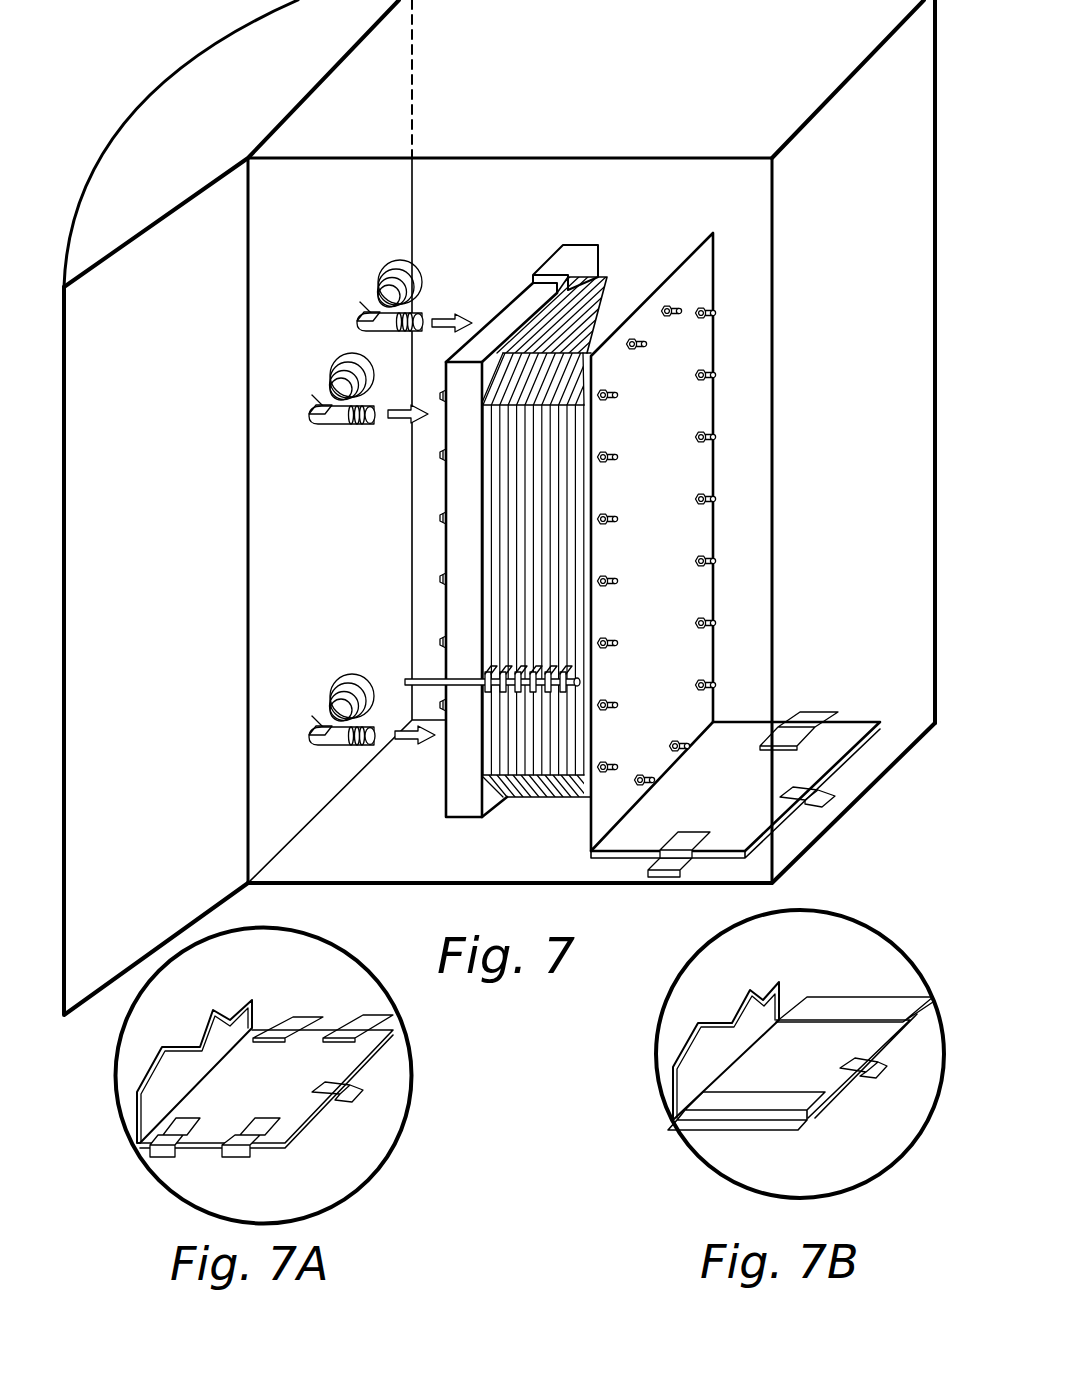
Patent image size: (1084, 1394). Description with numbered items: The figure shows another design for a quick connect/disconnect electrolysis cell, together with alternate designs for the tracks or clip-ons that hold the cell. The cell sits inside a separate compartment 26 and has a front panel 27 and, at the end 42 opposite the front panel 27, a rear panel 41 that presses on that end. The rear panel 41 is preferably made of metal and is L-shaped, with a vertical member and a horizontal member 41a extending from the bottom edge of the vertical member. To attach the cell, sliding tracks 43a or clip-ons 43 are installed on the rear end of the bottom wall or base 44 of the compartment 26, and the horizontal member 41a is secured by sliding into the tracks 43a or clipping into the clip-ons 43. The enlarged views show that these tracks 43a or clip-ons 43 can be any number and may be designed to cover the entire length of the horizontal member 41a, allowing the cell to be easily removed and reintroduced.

In FIG. 7, the separate compartment 26 is at (672, 208).
In FIG. 7, the front panel 27 is at (466, 419).
In FIG. 7, the rear panel 41 is at (697, 460).
In FIG. 7, the horizontal member 41a is at (827, 747).
In FIG. 7, the end 42 is at (578, 669).
In FIG. 7, the clip-ons 43 is at (673, 862).
In FIG. 7A, the clip-ons 43 is at (257, 1145).
In FIG. 7B, the sliding tracks 43a is at (733, 1123).
In FIG. 7, the bottom wall or base 44 is at (455, 859).